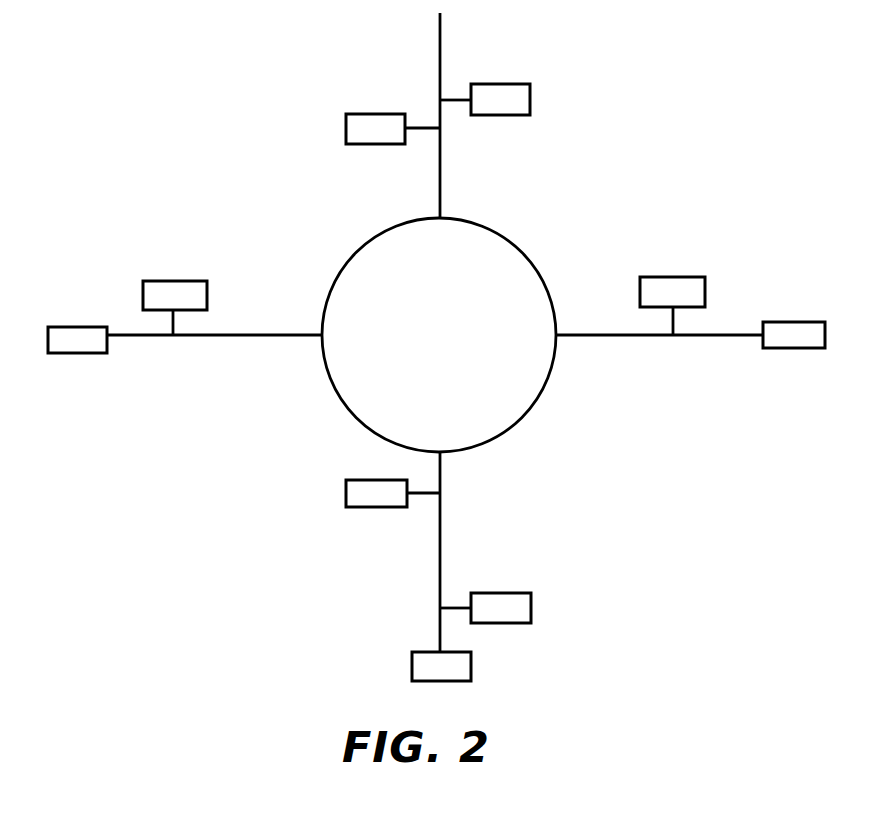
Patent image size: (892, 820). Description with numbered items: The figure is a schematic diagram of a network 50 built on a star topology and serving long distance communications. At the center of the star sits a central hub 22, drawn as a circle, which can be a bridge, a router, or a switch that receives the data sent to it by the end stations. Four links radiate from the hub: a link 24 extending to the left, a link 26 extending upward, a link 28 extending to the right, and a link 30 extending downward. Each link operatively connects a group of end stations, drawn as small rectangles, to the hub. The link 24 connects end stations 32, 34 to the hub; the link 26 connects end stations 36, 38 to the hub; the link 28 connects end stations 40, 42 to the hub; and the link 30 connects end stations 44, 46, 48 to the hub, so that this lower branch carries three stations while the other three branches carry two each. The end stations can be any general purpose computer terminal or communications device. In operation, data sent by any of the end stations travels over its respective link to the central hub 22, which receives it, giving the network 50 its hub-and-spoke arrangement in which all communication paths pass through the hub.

The central hub 22 is at (458, 351).
The link 24 is at (262, 335).
The link 26 is at (440, 175).
The link 28 is at (591, 334).
The link 30 is at (441, 473).
The end station 32 is at (50, 327).
The end station 34 is at (207, 281).
The end station 36 is at (346, 114).
The end station 38 is at (530, 84).
The end station 40 is at (705, 277).
The end station 42 is at (825, 322).
The end station 44 is at (346, 480).
The end station 46 is at (531, 593).
The end station 48 is at (412, 652).
The network 50 is at (637, 123).